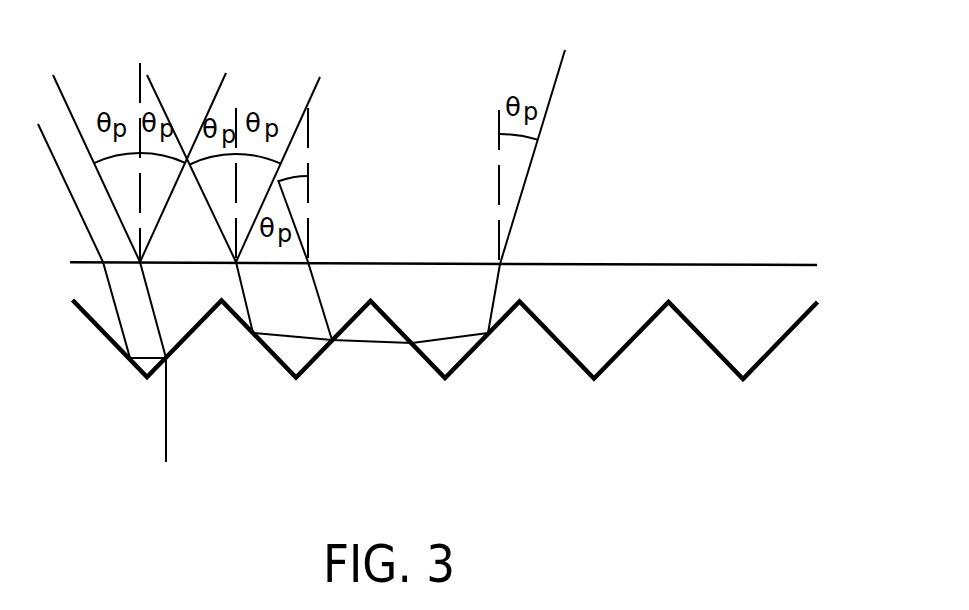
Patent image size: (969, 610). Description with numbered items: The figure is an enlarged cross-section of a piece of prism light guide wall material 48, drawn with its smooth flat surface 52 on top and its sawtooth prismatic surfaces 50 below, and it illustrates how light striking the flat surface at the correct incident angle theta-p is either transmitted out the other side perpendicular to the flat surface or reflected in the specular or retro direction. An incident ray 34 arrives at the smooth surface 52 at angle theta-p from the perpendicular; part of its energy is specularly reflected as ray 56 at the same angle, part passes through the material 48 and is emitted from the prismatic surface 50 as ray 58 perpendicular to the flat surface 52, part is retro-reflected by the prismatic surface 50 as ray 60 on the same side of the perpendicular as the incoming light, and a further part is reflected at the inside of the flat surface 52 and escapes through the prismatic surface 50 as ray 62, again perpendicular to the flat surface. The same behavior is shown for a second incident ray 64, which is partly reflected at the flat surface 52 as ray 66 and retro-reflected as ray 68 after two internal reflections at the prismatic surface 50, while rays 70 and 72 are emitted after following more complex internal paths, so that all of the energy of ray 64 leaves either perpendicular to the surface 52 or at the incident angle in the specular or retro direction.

The incident light ray 34 is at (105, 203).
The prism light guide wall material 48 is at (444, 317).
The prismatic surface 50 is at (468, 355).
The smooth surface 52 is at (630, 265).
The reflected ray 56 is at (193, 155).
The transmitted ray 58 is at (174, 423).
The retro-reflected ray 60 is at (95, 229).
The escaping ray 62 is at (88, 315).
The incident ray 64 is at (200, 190).
The reflected ray 66 is at (291, 156).
The retro-reflected ray 68 is at (303, 233).
The emitted ray 70 is at (539, 177).
The emitted ray 72 is at (412, 343).